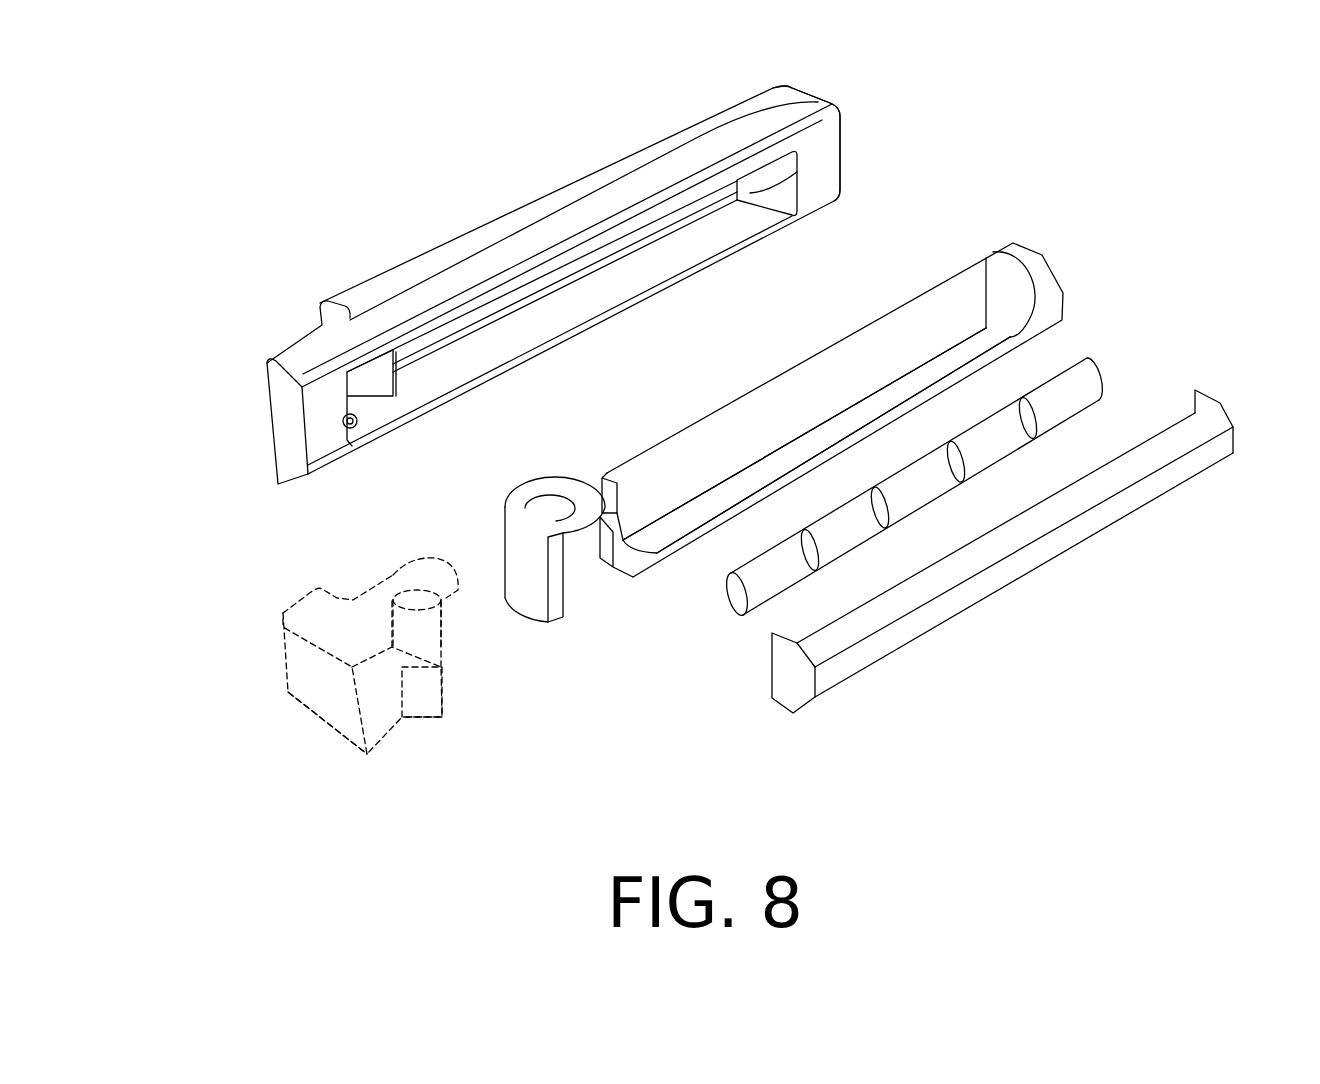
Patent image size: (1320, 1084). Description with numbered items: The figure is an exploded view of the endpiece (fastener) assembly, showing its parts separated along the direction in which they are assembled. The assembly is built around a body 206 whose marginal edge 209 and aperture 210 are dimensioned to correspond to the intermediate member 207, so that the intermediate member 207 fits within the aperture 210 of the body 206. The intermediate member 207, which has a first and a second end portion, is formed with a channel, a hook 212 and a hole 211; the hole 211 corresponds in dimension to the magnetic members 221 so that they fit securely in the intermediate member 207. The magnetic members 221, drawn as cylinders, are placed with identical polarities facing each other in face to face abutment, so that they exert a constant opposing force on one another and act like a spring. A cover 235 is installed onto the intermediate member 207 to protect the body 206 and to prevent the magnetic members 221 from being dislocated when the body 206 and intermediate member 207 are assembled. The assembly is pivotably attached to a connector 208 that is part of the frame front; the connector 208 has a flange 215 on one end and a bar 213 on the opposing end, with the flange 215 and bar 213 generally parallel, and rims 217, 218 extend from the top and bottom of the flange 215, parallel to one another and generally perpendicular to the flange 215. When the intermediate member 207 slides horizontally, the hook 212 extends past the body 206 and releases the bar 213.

The body 206 is at (560, 220).
The intermediate member 207 is at (953, 313).
The connector 208 is at (300, 673).
The marginal edge 209 is at (283, 403).
The aperture 210 is at (838, 122).
The hole 211 is at (847, 386).
The hook 212 is at (523, 545).
The bar 213 is at (443, 615).
The flange 215 is at (378, 737).
The rim 217 is at (405, 574).
The rim 218 is at (450, 678).
The magnetic members 221 is at (1100, 372).
The cover 235 is at (1092, 522).